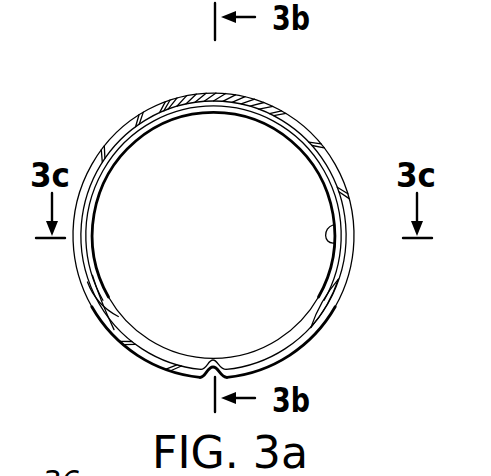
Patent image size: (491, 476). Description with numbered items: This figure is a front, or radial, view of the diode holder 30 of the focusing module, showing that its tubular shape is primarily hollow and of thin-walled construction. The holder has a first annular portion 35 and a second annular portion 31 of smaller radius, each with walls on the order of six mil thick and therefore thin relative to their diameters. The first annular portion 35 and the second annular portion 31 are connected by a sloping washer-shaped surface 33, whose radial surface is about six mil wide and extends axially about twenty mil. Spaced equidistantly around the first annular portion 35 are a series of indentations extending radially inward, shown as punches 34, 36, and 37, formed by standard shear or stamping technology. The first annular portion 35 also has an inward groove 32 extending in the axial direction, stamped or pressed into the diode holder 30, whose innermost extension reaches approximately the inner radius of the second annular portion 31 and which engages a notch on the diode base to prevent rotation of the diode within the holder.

The diode holder 30 is at (114, 108).
The second annular portion 31 is at (334, 243).
The groove 32 is at (208, 378).
The sloping washer-shaped surface 33 is at (320, 168).
The punch 34 is at (217, 100).
The first annular portion 35 is at (272, 108).
The punch 36 is at (95, 310).
The punch 37 is at (334, 304).